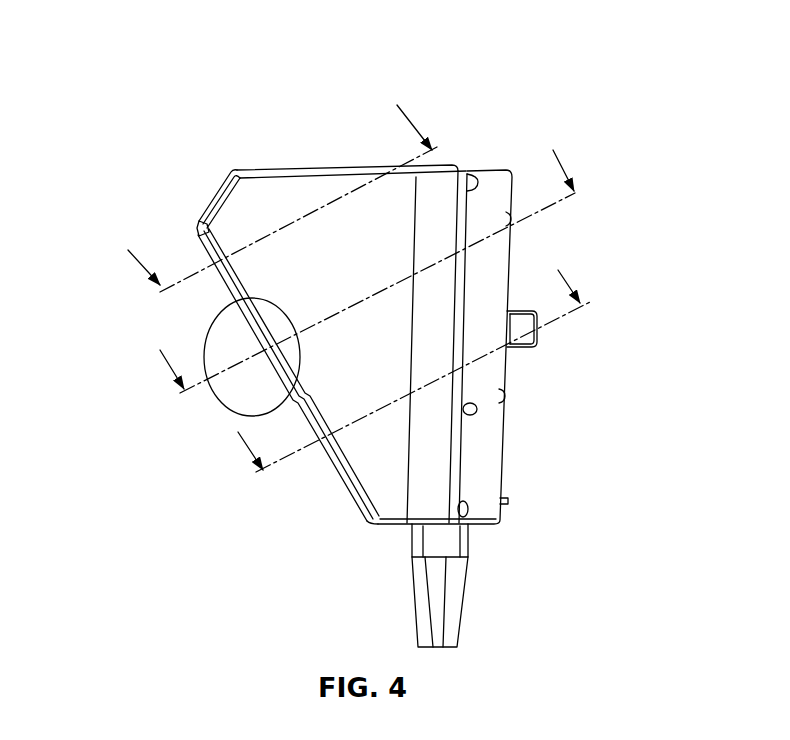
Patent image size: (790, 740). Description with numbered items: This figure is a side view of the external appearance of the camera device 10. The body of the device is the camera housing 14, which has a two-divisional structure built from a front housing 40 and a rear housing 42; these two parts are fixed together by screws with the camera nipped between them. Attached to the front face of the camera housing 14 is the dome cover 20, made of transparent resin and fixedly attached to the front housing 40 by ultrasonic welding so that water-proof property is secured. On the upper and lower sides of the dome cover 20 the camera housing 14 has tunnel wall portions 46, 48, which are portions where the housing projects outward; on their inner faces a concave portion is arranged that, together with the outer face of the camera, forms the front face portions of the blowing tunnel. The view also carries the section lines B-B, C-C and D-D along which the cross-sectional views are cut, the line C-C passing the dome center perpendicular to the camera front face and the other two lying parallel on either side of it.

The camera device 10 is at (192, 93).
The camera housing 14 is at (288, 168).
The dome cover 20 is at (240, 392).
The front housing 40 is at (391, 495).
The rear housing 42 is at (490, 472).
The tunnel wall portion 46 is at (207, 205).
The tunnel wall portion 48 is at (343, 487).